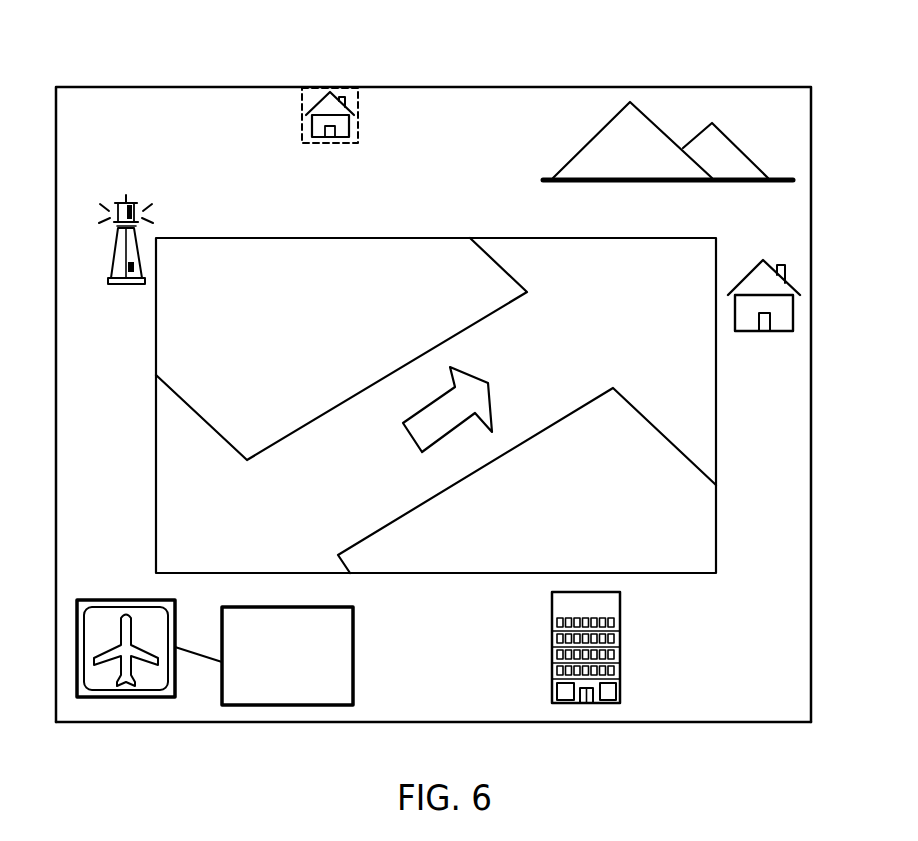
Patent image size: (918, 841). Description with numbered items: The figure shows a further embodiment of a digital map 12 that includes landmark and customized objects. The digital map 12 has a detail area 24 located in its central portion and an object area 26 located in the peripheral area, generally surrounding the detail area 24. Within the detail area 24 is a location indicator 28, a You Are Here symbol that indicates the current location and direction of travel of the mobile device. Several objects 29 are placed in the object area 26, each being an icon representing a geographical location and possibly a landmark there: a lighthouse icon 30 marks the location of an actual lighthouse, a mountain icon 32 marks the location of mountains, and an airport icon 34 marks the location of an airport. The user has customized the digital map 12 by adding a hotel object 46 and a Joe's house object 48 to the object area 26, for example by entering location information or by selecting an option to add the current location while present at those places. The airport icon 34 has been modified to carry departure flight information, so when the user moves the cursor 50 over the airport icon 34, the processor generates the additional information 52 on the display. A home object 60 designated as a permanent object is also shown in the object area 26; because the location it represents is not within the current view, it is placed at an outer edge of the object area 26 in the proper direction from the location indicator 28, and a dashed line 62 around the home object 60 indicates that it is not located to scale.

The digital map 12 is at (424, 72).
The detail area 24 is at (699, 525).
The object area 26 is at (440, 710).
The location indicator 28 is at (455, 424).
The objects 29 is at (588, 118).
The lighthouse icon 30 is at (118, 254).
The mountain icon 32 is at (735, 155).
The airport icon 34 is at (152, 681).
The hotel object 46 is at (613, 640).
The Joe's house object 48 is at (780, 305).
The cursor 50 is at (77, 652).
The additional information 52 is at (343, 656).
The home object 60 is at (350, 125).
The dashed line 62 is at (300, 118).